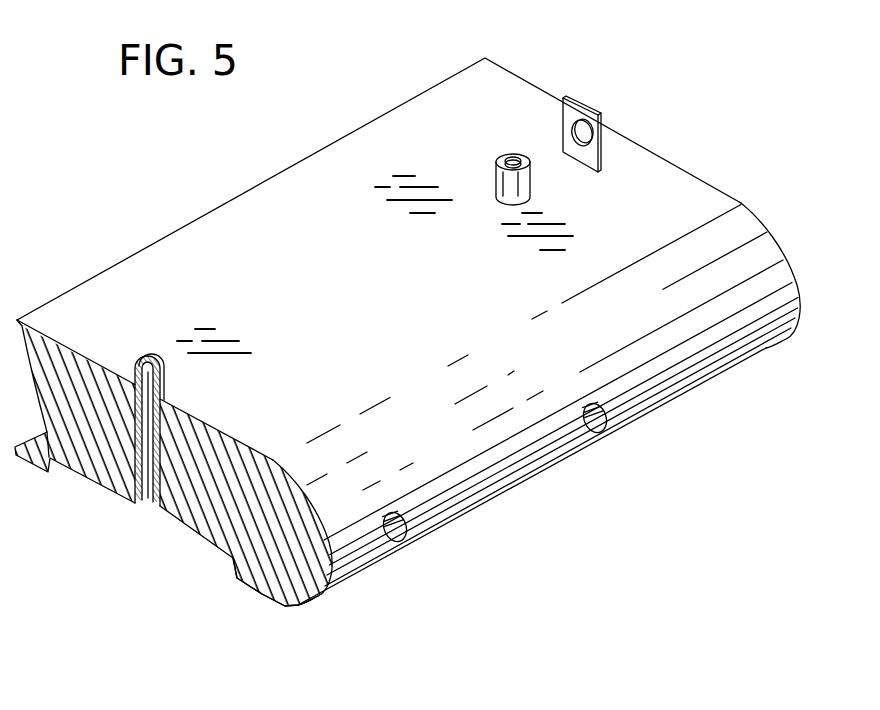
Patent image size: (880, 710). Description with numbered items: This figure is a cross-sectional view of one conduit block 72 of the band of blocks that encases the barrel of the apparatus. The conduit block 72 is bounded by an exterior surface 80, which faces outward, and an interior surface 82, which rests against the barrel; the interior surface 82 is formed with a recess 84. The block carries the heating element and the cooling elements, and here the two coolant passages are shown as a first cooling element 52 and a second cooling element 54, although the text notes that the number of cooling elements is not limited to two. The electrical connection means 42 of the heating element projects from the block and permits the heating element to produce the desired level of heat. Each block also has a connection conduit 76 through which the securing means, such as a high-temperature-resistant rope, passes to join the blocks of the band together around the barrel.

The conduit block 72 is at (323, 147).
The exterior surface 80 is at (96, 307).
The first cooling element 52 is at (150, 357).
The second cooling element 54 is at (520, 152).
The electrical connection means 42 is at (580, 102).
The connection conduit 76 is at (407, 532).
The recess 84 is at (227, 557).
The interior surface 82 is at (268, 593).